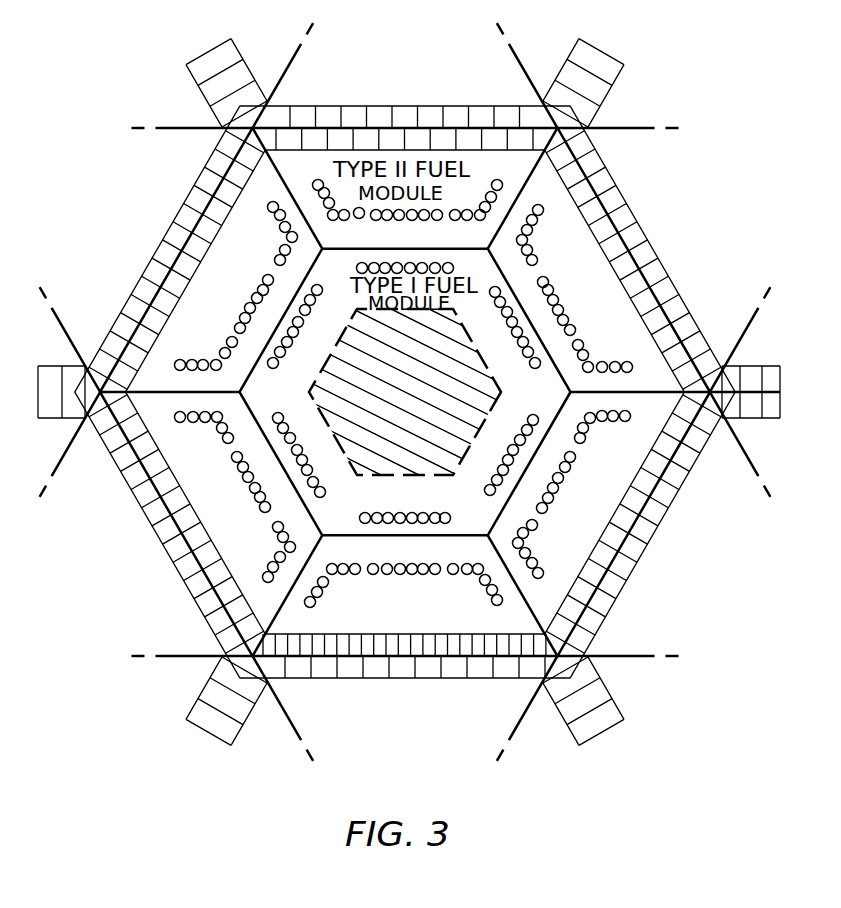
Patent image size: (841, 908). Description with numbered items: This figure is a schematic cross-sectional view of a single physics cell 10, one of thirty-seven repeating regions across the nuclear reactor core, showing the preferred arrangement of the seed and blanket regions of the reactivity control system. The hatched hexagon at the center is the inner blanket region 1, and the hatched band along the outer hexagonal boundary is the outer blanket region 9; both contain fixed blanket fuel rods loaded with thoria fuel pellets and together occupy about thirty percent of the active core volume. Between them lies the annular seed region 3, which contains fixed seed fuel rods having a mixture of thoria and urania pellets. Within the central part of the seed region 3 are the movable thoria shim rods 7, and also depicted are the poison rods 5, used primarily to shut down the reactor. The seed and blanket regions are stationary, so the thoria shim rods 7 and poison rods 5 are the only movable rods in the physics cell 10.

The inner blanket region 1 is at (350, 387).
The annular seed region 3 is at (304, 418).
The poison rods 5 is at (500, 443).
The movable thoria shim rods 7 is at (572, 296).
The outer blanket region 9 is at (237, 202).
The physics cell 10 is at (678, 240).